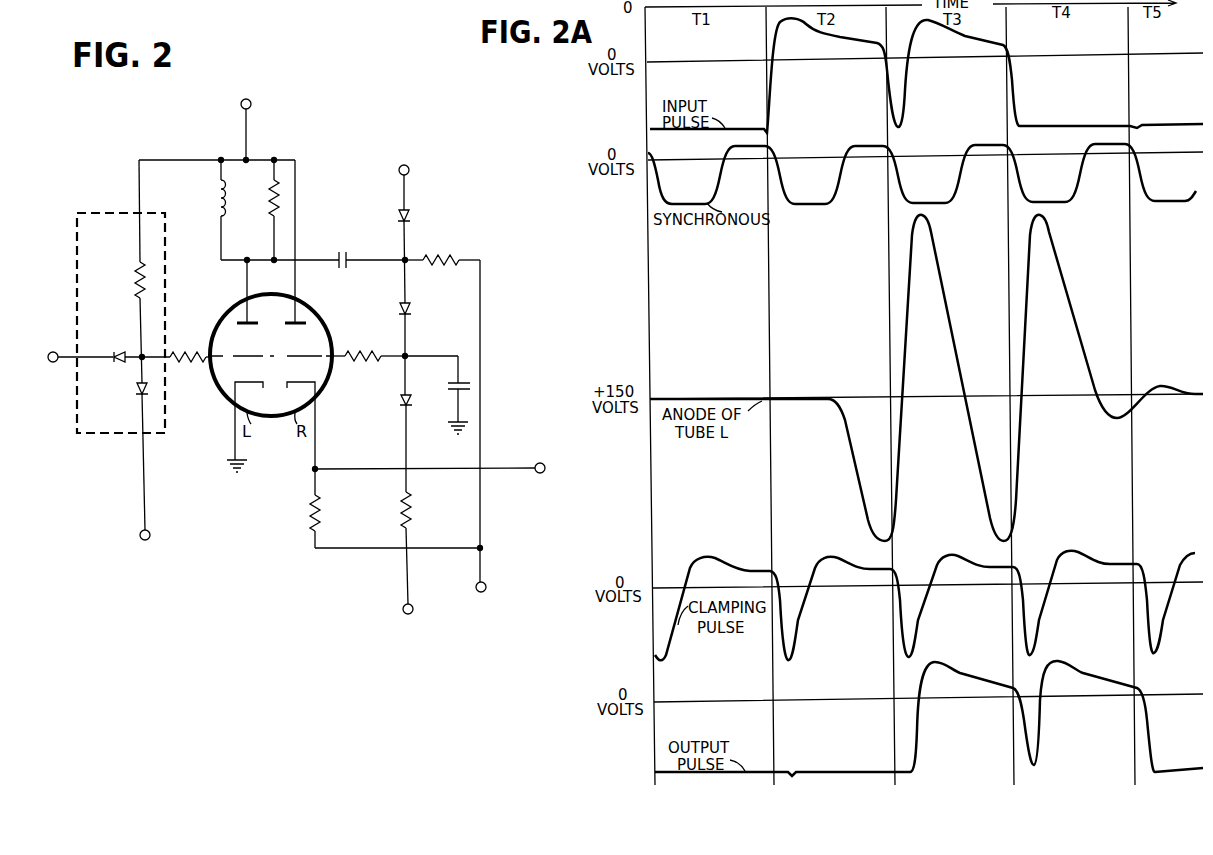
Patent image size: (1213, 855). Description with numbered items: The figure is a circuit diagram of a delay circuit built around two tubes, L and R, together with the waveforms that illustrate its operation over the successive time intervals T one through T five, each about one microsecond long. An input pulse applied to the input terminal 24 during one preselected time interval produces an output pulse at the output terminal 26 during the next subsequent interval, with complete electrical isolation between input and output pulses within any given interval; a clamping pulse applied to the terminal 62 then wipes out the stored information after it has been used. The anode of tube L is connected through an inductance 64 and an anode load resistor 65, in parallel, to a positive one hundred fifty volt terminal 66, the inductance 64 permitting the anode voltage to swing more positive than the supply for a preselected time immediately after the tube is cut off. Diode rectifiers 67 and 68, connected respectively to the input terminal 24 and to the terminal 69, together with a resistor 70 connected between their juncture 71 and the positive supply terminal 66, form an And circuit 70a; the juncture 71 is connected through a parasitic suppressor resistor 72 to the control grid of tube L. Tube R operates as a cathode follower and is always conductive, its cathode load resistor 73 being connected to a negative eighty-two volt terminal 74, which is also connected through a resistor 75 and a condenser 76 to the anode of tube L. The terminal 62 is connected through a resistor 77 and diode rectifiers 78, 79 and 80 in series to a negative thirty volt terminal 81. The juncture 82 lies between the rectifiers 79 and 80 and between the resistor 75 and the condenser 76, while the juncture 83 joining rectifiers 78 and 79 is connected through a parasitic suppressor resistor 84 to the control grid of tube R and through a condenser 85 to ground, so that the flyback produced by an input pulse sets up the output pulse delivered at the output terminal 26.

The input terminal 24 is at (55, 362).
The output terminal 26 is at (548, 452).
The clamping pulse terminal 62 is at (403, 607).
The inductance 64 is at (218, 198).
The anode load resistor 65 is at (270, 196).
The +150 volt terminal 66 is at (251, 106).
The diode rectifier 67 is at (119, 363).
The diode rectifier 68 is at (138, 392).
The synchronous pulse terminal 69 is at (149, 540).
The resistor 70 is at (136, 279).
The And circuit 70a is at (78, 262).
The juncture 71 is at (143, 356).
The parasitic suppressor resistor 72 is at (200, 352).
The cathode load resistor 73 is at (320, 503).
The -82 volt terminal 74 is at (486, 588).
The resistor 75 is at (445, 255).
The condenser 76 is at (339, 252).
The resistor 77 is at (411, 502).
The diode rectifier 78 is at (412, 400).
The diode rectifier 79 is at (411, 310).
The diode rectifier 80 is at (410, 216).
The -30 volt terminal 81 is at (409, 172).
The juncture 82 is at (407, 262).
The juncture 83 is at (408, 354).
The parasitic suppressor resistor 84 is at (364, 360).
The condenser 85 is at (450, 384).